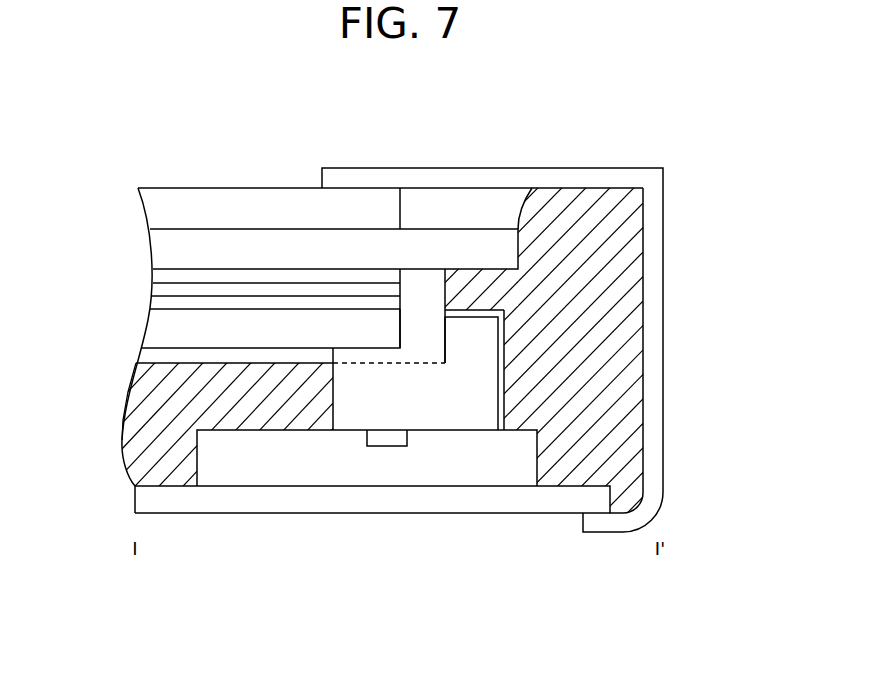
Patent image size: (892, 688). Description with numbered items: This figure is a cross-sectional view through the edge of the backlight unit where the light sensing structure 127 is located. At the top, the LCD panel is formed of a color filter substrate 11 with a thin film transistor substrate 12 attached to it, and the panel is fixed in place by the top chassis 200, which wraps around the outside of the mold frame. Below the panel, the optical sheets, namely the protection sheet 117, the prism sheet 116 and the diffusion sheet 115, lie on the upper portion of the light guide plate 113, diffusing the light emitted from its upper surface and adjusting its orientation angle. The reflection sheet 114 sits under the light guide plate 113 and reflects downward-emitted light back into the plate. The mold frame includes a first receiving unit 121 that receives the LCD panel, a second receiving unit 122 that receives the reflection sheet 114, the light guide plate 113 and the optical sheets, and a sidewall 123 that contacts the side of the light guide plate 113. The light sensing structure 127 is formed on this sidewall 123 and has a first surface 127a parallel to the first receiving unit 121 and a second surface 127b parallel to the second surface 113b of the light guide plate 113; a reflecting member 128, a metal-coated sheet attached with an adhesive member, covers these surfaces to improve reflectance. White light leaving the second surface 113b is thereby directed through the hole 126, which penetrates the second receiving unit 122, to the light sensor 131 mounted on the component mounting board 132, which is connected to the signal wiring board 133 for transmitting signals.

The color filter substrate 11 is at (147, 205).
The thin film transistor substrate 12 is at (156, 243).
The protection sheet 117 is at (160, 273).
The prism sheet 116 is at (158, 290).
The diffusion sheet 115 is at (150, 305).
The light guide plate 113 is at (147, 327).
The second surface 113b is at (399, 332).
The reflection sheet 114 is at (143, 355).
The second receiving unit 122 is at (132, 423).
The first receiving unit 121 is at (480, 288).
The light sensing structure 127 is at (757, 295).
The first surface 127a is at (480, 310).
The second surface 127b is at (503, 360).
The reflecting member 128 is at (505, 415).
The sidewall 123 is at (635, 470).
The hole 126 is at (345, 423).
The component mounting board 132 is at (228, 480).
The light sensor 131 is at (387, 442).
The signal wiring board 133 is at (545, 503).
The top chassis 200 is at (655, 217).